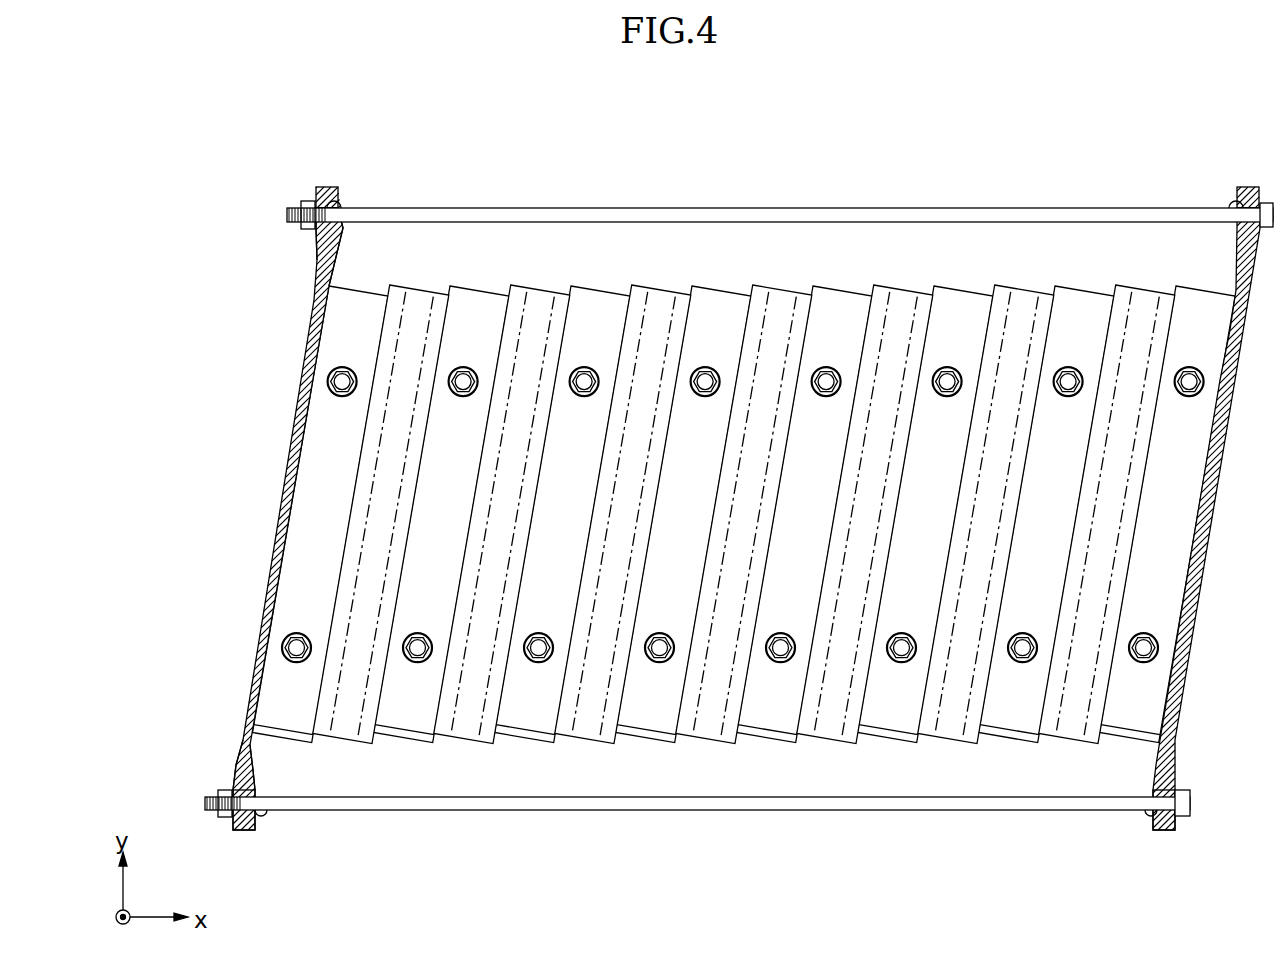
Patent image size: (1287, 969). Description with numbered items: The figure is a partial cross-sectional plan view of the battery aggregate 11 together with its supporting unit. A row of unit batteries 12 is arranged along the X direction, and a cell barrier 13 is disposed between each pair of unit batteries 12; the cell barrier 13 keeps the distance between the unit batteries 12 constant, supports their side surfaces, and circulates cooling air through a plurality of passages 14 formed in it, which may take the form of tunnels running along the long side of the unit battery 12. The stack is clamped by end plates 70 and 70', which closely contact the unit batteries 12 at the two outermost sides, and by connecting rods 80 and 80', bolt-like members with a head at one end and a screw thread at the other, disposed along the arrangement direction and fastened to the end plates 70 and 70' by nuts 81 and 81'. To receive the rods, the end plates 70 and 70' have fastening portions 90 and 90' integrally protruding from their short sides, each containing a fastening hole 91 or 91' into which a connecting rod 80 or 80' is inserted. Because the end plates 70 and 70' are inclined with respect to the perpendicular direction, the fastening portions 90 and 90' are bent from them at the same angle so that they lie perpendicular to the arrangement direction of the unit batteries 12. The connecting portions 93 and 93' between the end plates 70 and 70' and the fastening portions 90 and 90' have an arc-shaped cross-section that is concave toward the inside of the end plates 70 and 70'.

The battery aggregate 11 is at (804, 131).
The unit battery 12 is at (660, 743).
The cell barrier 13 is at (607, 742).
The passage 14 is at (565, 738).
The end plate 70 is at (288, 508).
The end plate 70' is at (1220, 508).
The connecting rod 80 is at (780, 194).
The connecting rod 80' is at (697, 827).
The nut 81 is at (772, 194).
The nut 81' is at (687, 830).
The fastening portion 90 is at (791, 173).
The fastening portion 90' is at (710, 840).
The fastening hole 91 is at (785, 188).
The fastening hole 91' is at (706, 833).
The connecting portion 93 is at (302, 247).
The connecting portion 93' is at (217, 765).